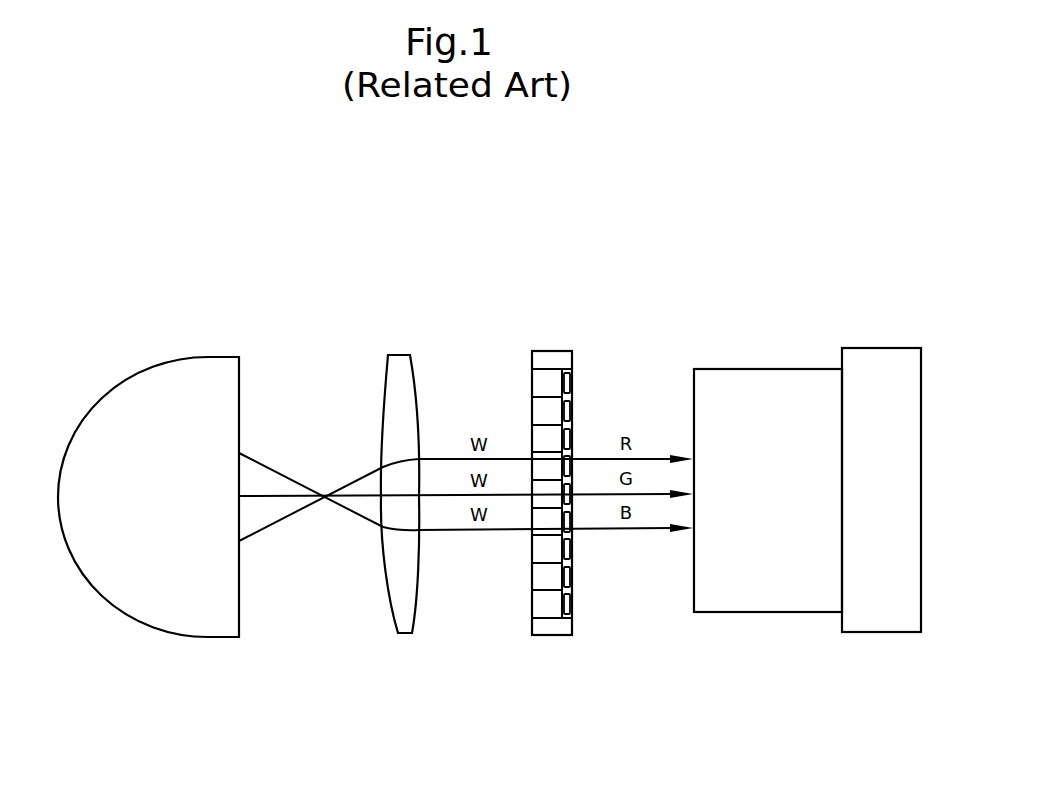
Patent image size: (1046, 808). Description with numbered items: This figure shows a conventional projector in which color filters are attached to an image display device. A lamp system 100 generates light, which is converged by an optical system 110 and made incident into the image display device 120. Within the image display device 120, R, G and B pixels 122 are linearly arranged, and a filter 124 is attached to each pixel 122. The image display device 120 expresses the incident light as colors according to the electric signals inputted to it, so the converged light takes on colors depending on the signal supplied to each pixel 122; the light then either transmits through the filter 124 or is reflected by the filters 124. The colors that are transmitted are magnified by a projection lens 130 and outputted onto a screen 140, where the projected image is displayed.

The lamp system 100 is at (212, 357).
The optical system 110 is at (397, 355).
The image display device 120 is at (547, 471).
The pixel 122 is at (533, 600).
The filter 124 is at (575, 605).
The projection lens 130 is at (765, 369).
The screen 140 is at (880, 348).